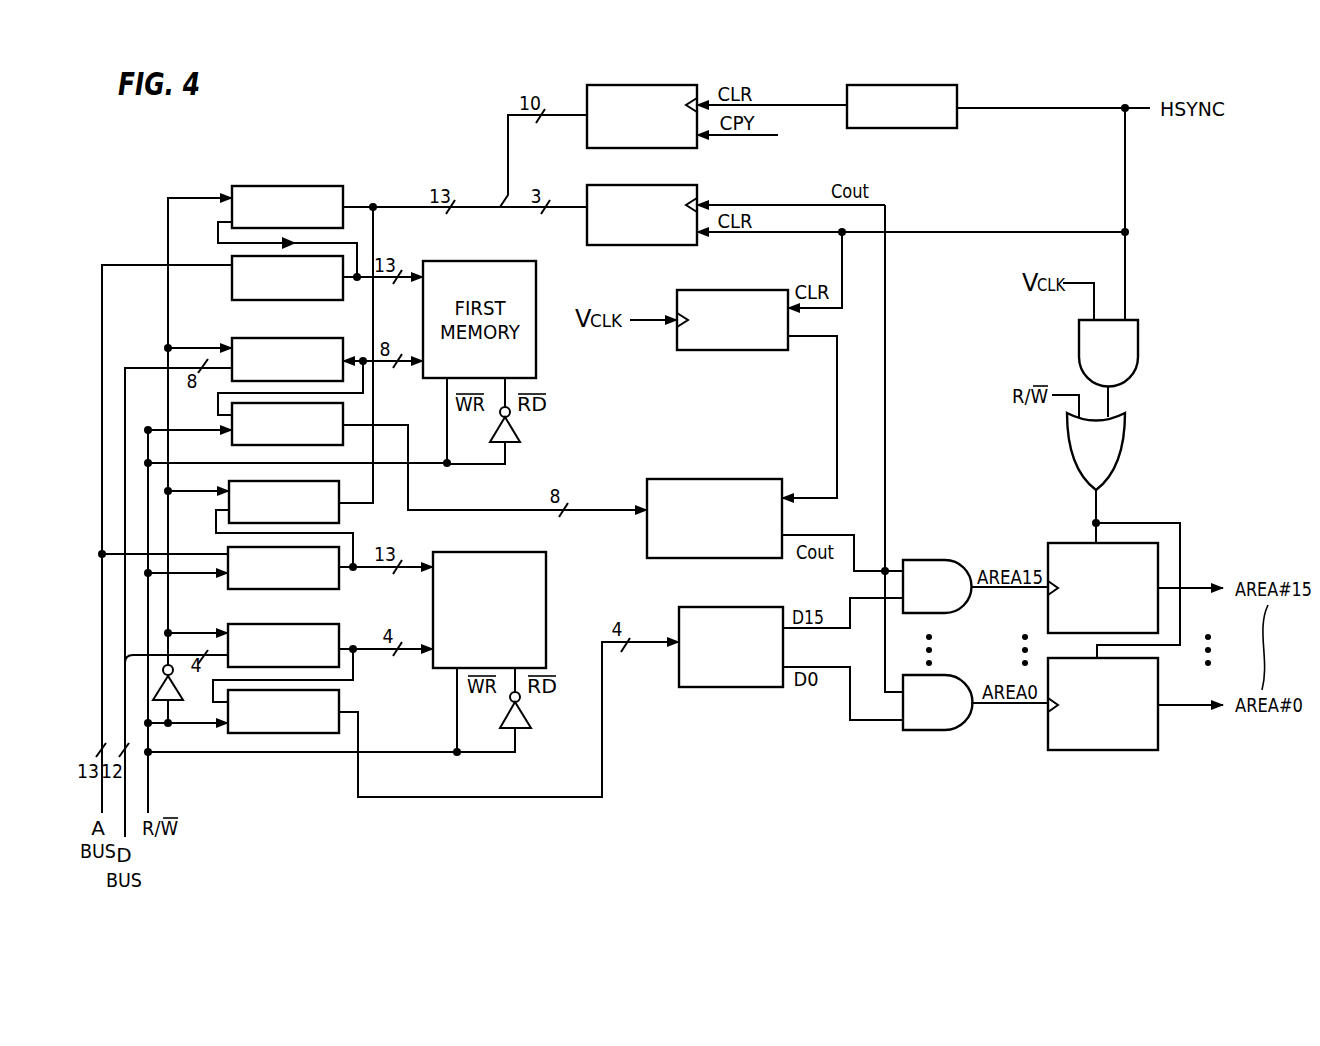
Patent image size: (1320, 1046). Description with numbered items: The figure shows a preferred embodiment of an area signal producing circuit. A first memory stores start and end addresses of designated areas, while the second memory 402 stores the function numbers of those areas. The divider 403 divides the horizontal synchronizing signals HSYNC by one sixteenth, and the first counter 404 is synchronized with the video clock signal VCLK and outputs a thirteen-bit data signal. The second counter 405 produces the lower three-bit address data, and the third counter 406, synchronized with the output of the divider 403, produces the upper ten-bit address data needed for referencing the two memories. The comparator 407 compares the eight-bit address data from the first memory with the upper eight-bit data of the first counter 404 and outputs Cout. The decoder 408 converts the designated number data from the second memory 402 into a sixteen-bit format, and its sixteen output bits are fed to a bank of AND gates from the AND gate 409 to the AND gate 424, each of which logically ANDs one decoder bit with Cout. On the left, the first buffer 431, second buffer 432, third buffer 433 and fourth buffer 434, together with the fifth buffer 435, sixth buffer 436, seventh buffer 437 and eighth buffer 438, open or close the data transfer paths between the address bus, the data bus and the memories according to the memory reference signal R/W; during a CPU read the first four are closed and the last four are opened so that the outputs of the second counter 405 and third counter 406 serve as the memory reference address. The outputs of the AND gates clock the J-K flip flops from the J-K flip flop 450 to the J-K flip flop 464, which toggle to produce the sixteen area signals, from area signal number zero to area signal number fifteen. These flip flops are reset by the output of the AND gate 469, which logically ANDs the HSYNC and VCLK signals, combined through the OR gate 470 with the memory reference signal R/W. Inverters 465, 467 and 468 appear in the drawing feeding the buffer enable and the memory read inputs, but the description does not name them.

The second memory 402 is at (485, 552).
The divider 403 is at (903, 85).
The first counter 404 is at (738, 290).
The second counter 405 is at (648, 185).
The third counter 406 is at (648, 85).
The comparator 407 is at (708, 479).
The decoder 408 is at (712, 607).
The AND gate circuit 409 is at (912, 560).
The AND gate circuit 424 is at (918, 730).
The first buffer 431 is at (242, 300).
The second buffer 432 is at (242, 446).
The third buffer 433 is at (242, 588).
The fourth buffer 434 is at (339, 702).
The fifth buffer 435 is at (300, 186).
The sixth buffer 436 is at (292, 338).
The seventh buffer 437 is at (339, 512).
The eighth buffer 438 is at (292, 624).
The J-K flip flop 450 is at (1075, 543).
The J-K flip flop 464 is at (1075, 750).
The inverter 465 is at (180, 692).
The inverter 467 is at (517, 430).
The inverter 468 is at (530, 716).
The AND gate 469 is at (1162, 342).
The OR gate 470 is at (1125, 442).